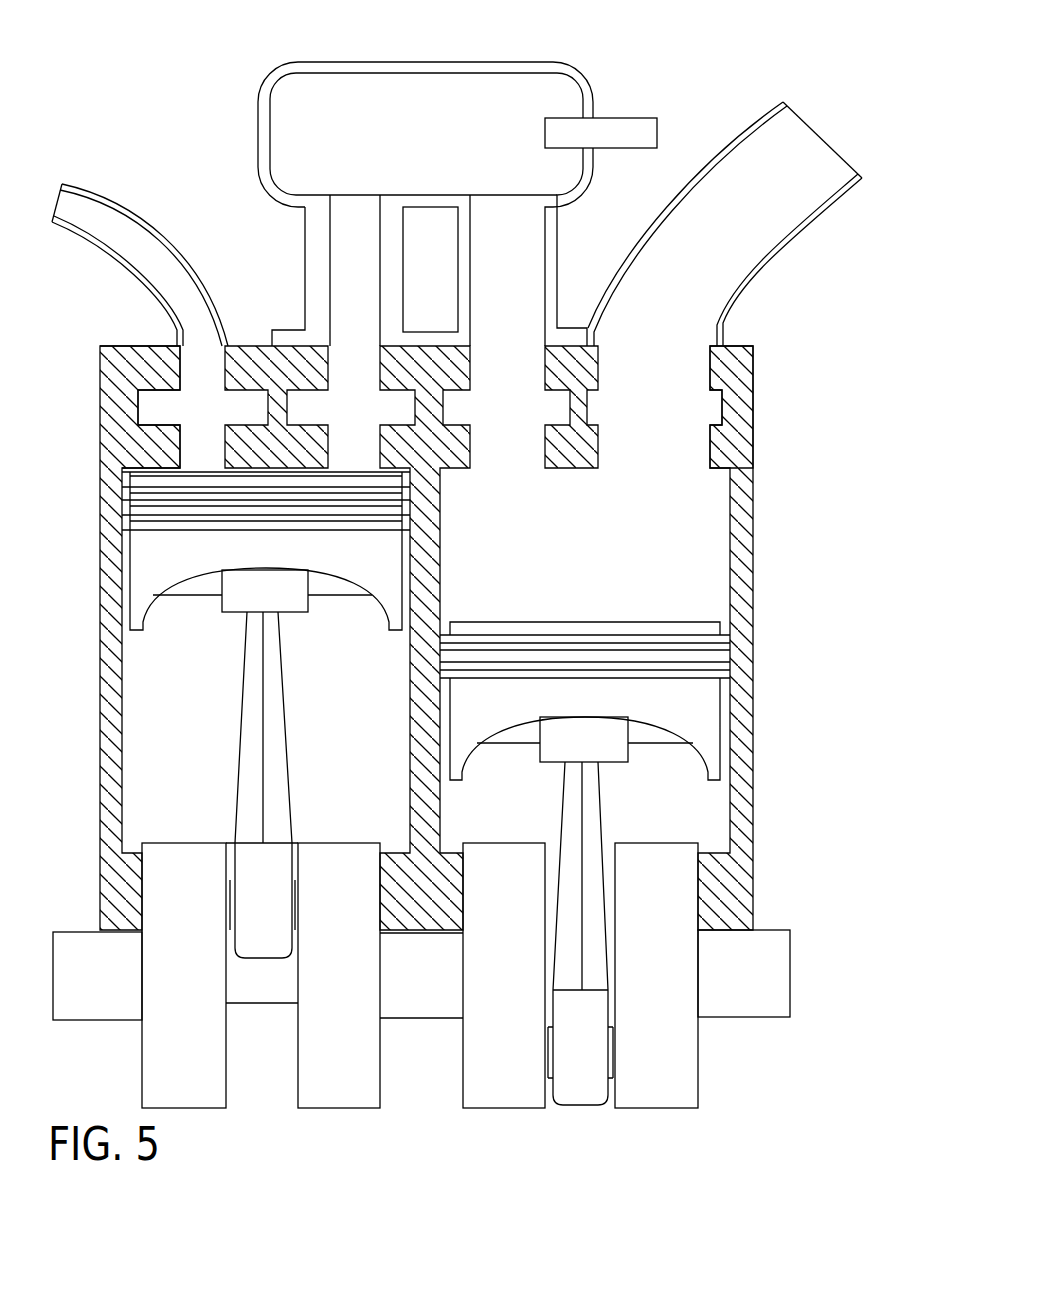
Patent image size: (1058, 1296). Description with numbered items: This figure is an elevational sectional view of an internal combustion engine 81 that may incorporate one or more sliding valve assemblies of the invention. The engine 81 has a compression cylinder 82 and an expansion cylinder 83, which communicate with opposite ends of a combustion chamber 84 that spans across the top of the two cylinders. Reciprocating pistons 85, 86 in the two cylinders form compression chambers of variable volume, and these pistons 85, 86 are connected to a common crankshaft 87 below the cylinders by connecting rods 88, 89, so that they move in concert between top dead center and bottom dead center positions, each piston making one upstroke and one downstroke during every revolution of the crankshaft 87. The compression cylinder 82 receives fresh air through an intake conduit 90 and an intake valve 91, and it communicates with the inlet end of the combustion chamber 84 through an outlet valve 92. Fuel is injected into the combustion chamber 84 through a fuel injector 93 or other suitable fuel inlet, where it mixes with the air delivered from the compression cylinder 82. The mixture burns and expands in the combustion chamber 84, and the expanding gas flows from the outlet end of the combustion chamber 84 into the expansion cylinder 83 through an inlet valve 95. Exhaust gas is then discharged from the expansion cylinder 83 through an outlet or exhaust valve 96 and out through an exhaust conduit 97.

The engine 81 is at (600, 70).
The compression cylinder 82 is at (158, 730).
The expansion cylinder 83 is at (702, 558).
The combustion chamber 84 is at (367, 103).
The piston 85 is at (143, 563).
The piston 86 is at (705, 708).
The crankshaft 87 is at (407, 1012).
The connecting rod 88 is at (262, 762).
The connecting rod 89 is at (583, 900).
The intake conduit 90 is at (135, 248).
The intake valve 91 is at (158, 413).
The outlet valve 92 is at (308, 403).
The fuel injector 93 is at (638, 123).
The inlet valve 95 is at (550, 405).
The exhaust valve 96 is at (707, 408).
The exhaust conduit 97 is at (778, 205).